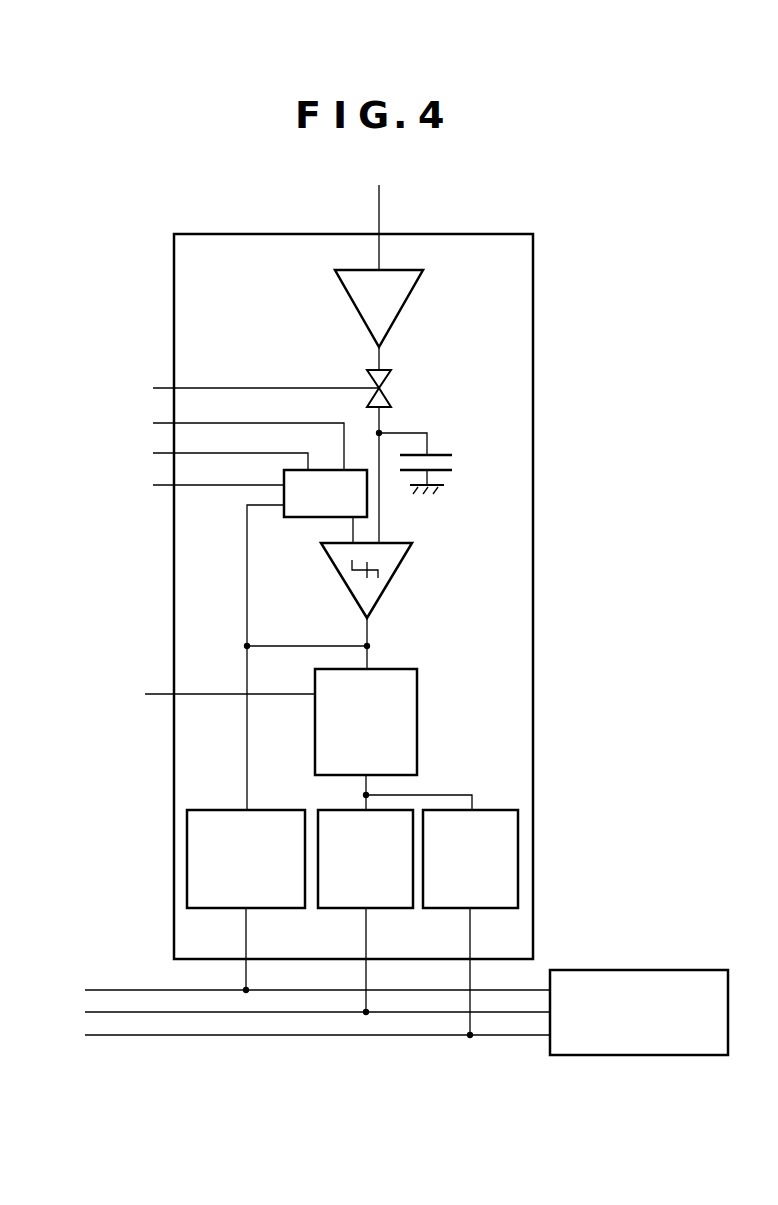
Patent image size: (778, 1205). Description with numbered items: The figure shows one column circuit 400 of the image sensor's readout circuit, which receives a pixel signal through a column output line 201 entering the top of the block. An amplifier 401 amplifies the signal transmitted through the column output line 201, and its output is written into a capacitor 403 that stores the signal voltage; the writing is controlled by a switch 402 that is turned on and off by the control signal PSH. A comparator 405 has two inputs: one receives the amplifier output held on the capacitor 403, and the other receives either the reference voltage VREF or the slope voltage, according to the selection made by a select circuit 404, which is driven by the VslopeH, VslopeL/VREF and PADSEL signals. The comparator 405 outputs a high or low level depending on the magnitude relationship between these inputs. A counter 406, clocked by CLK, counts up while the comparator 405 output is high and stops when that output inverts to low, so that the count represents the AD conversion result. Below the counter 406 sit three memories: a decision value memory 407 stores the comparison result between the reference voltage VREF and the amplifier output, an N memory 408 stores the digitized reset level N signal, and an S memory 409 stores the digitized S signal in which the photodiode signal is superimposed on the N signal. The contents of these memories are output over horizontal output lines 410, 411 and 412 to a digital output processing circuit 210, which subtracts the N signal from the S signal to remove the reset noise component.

The column output line 201 is at (381, 204).
The column circuit 400 is at (174, 272).
The amplifier 401 is at (405, 310).
The switch 402 is at (386, 394).
The capacitor 403 is at (437, 453).
The select circuit 404 is at (292, 517).
The comparator 405 is at (397, 575).
The counter 406 is at (417, 690).
The decision value memory 407 is at (187, 836).
The N memory 408 is at (395, 908).
The S memory 409 is at (518, 828).
The horizontal output line 410 is at (142, 988).
The horizontal output line 411 is at (180, 1015).
The horizontal output line 412 is at (273, 1037).
The digital output processing circuit 210 is at (693, 970).